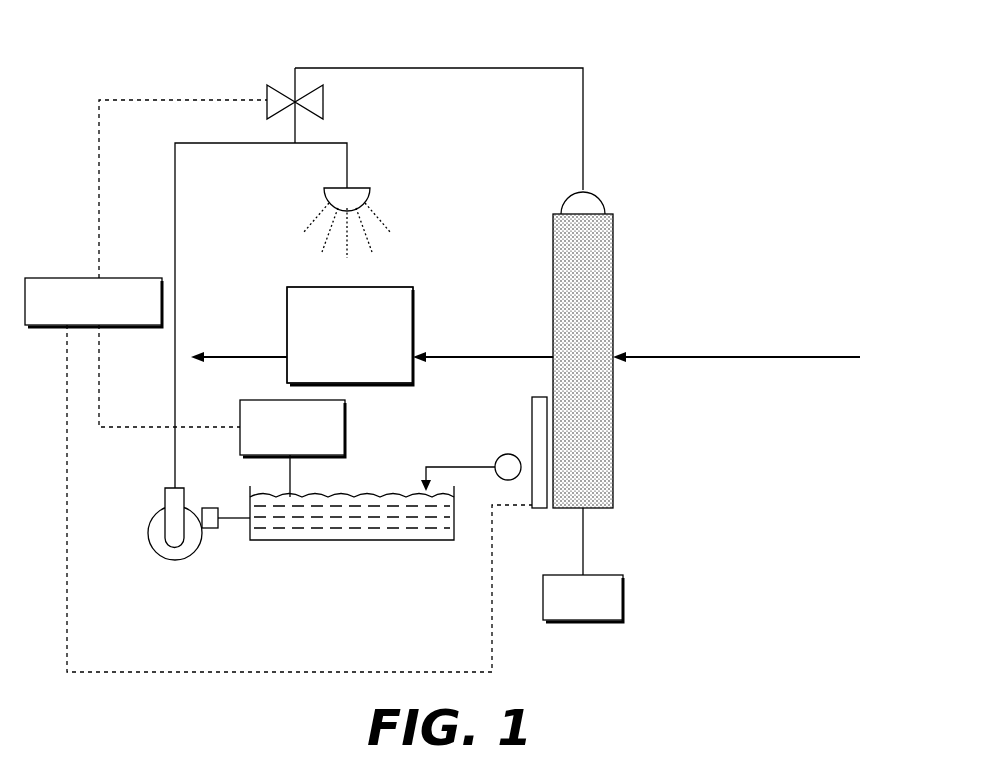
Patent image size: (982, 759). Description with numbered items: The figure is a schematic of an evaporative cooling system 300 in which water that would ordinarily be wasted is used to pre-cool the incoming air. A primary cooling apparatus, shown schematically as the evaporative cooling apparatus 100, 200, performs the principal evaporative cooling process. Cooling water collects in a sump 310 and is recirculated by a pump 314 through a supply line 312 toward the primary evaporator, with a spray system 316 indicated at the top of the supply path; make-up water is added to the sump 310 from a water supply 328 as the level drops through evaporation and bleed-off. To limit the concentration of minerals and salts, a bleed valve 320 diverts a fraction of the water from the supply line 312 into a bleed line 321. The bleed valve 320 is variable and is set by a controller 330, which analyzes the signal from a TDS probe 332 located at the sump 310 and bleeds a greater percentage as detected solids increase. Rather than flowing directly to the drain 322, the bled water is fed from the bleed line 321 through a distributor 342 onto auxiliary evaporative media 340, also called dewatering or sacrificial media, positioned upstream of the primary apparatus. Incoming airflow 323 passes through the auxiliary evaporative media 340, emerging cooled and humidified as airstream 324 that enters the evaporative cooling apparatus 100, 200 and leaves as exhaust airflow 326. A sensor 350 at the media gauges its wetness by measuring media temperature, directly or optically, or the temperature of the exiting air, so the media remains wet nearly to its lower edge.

The evaporative cooling apparatus 100 is at (413, 305).
The evaporative cooling apparatus 200 is at (350, 335).
The evaporative cooling system 300 is at (755, 109).
The sump 310 is at (340, 541).
The supply line 312 is at (175, 208).
The pump 314 is at (157, 553).
The spray system 316 is at (352, 188).
The bleed valve 320 is at (273, 86).
The bleed line 321 is at (498, 68).
The drain 322 is at (623, 597).
The airflow 323 is at (780, 358).
The airstream 324 is at (469, 356).
The airflow exiting evaporative process 326 is at (242, 356).
The water supply 328 is at (456, 467).
The controller 330 is at (51, 278).
The TDS probe 332 is at (345, 429).
The auxiliary evaporative media 340 is at (613, 272).
The distributor 342 is at (600, 196).
The sensor 350 is at (532, 420).